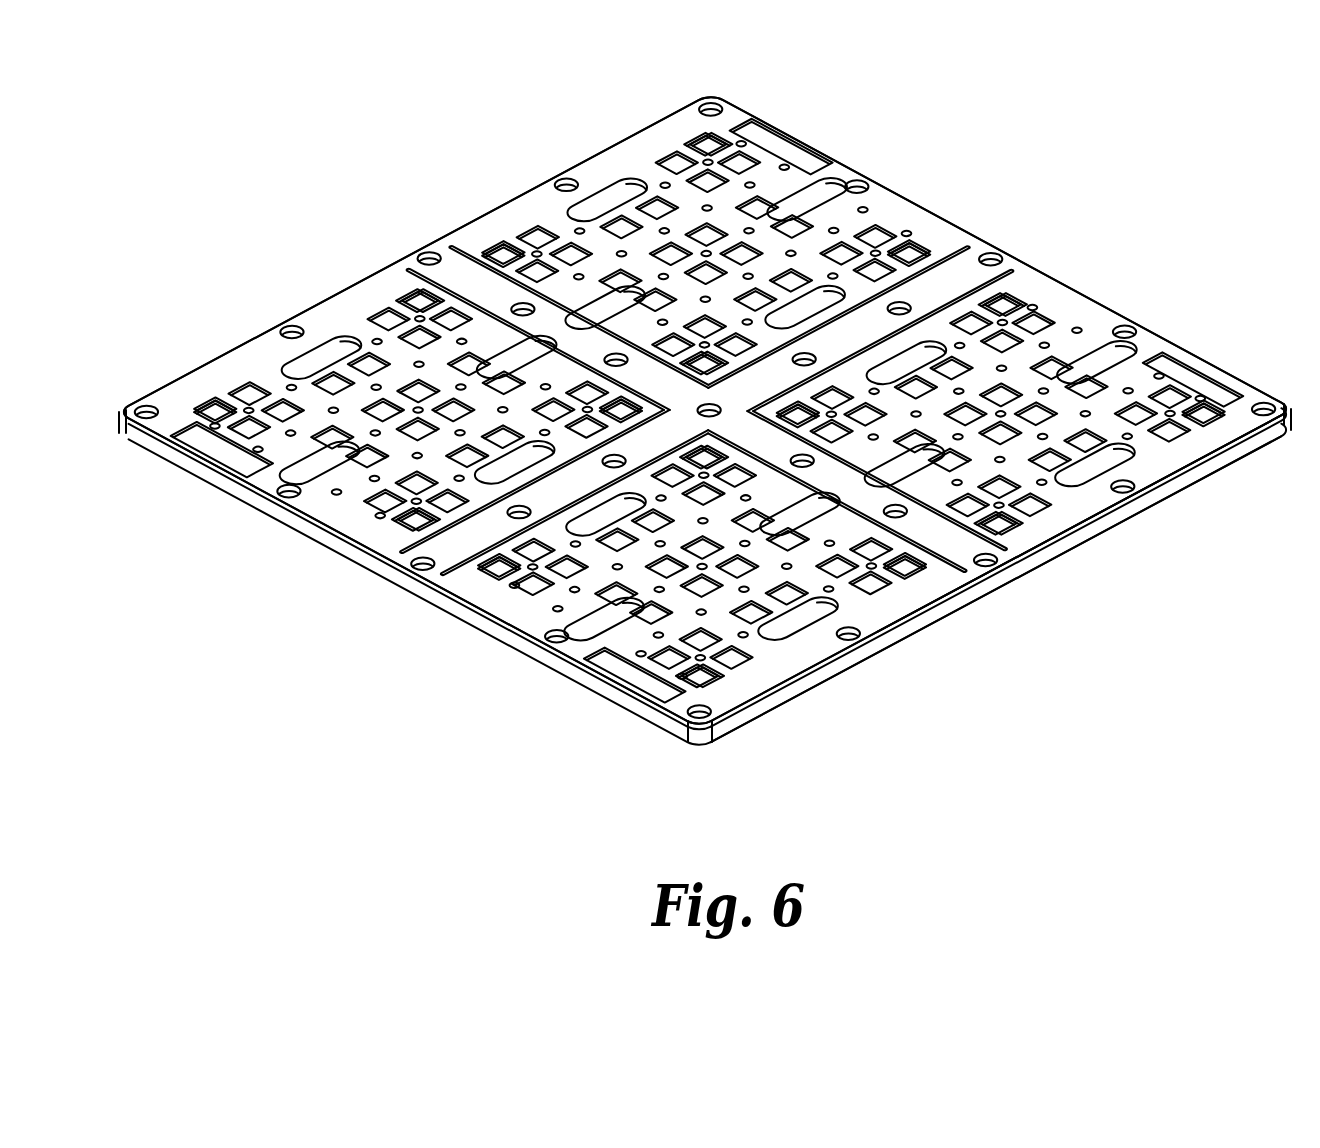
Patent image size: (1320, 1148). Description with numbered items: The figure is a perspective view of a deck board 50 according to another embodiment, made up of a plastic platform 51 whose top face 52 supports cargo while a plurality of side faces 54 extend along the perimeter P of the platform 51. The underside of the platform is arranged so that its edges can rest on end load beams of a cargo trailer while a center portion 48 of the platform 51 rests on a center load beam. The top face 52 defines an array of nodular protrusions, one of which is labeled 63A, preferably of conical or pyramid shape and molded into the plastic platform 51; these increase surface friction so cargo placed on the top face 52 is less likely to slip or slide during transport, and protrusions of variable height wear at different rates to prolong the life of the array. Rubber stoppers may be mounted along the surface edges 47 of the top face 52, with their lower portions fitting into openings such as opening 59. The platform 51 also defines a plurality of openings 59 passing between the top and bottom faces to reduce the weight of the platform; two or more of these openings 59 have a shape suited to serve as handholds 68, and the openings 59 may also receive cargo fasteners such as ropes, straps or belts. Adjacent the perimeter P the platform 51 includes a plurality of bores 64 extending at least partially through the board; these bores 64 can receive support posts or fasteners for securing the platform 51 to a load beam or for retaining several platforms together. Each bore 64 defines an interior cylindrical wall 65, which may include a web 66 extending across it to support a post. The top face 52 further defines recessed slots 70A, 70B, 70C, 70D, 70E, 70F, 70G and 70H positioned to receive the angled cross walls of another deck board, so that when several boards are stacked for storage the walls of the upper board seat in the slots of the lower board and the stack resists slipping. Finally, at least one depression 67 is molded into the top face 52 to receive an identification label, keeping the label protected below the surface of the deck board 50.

The surface edges 47 is at (730, 690).
The center portion 48 is at (709, 403).
The deck board 50 is at (579, 726).
The plastic platform 51 is at (1222, 460).
The top face 52 is at (1072, 513).
The side faces 54 is at (808, 690).
The openings 59 is at (880, 595).
The nodular protrusion 63A is at (1078, 330).
The bores 64 is at (990, 257).
The interior cylindrical wall 65 is at (897, 306).
The web 66 is at (970, 603).
The depression 67 is at (242, 452).
The handholds 68 is at (1120, 372).
The recessed slot 70A is at (455, 247).
The recessed slot 70B is at (413, 268).
The recessed slot 70C is at (412, 556).
The recessed slot 70D is at (445, 578).
The recessed slot 70E is at (958, 573).
The recessed slot 70F is at (1007, 550).
The recessed slot 70G is at (1008, 274).
The recessed slot 70H is at (958, 243).
The perimeter P is at (1250, 388).